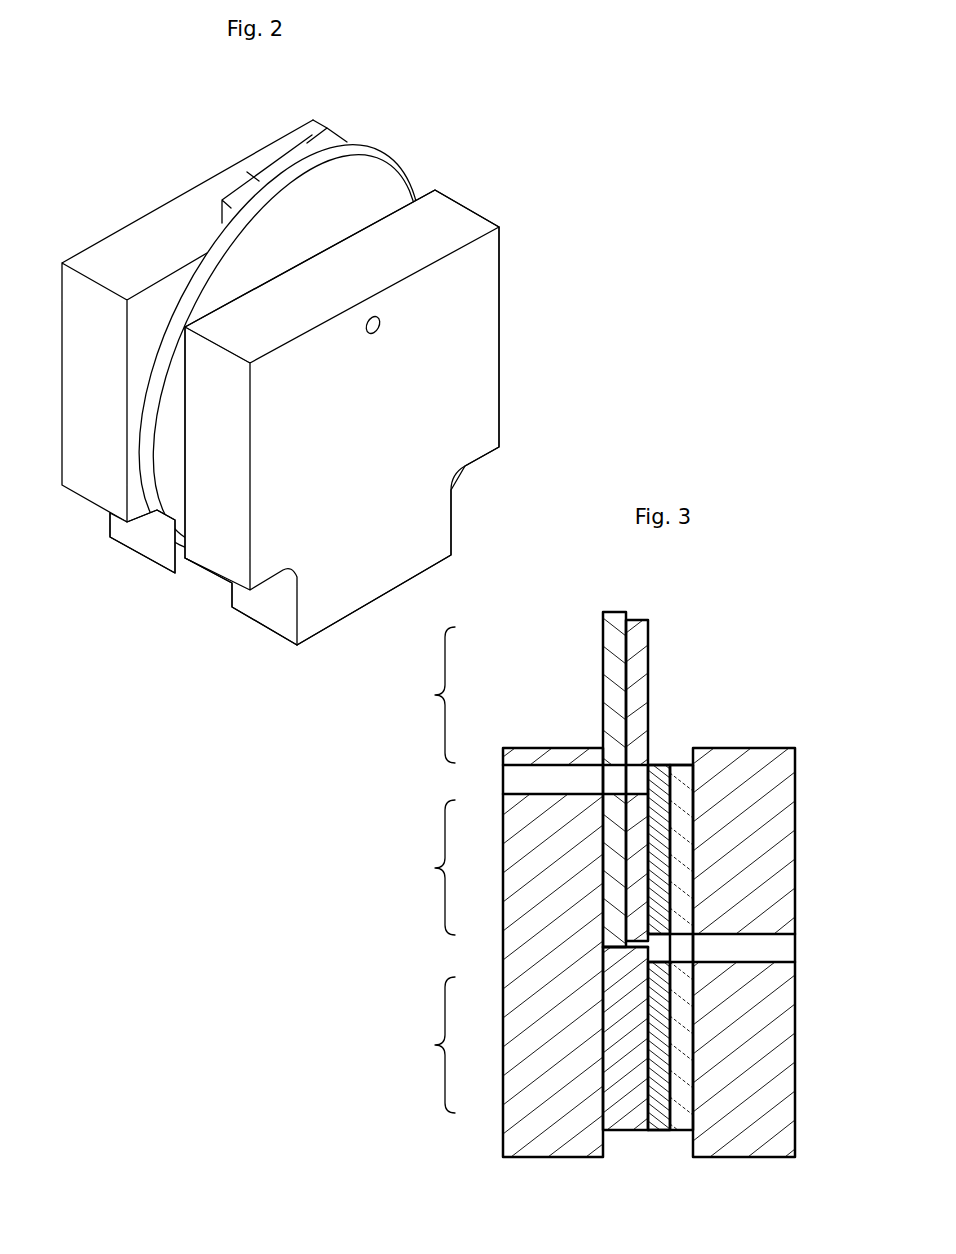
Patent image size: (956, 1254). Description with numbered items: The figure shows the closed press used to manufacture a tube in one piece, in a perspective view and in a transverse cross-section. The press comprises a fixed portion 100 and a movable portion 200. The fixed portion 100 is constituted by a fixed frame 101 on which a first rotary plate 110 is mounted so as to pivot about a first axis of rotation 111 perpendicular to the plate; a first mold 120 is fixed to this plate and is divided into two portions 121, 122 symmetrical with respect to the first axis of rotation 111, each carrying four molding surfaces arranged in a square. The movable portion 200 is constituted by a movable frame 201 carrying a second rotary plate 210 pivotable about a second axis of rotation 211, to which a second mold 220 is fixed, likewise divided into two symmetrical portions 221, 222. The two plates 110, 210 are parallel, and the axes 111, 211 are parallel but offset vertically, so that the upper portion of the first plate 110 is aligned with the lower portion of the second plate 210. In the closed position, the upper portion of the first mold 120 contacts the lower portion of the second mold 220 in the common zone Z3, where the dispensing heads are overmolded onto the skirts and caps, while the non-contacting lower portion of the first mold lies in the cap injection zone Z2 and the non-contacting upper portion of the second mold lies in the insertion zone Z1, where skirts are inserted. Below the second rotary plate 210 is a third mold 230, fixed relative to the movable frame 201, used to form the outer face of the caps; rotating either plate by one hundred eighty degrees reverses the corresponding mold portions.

In FIG. 2, the fixed portion 100 is at (95, 190).
In FIG. 3, the fixed frame 101 is at (760, 880).
In FIG. 2, the first rotary plate 110 is at (170, 435).
In FIG. 3, the first rotary plate 110 is at (682, 842).
In FIG. 3, the first axis of rotation 111 is at (755, 953).
In FIG. 3, the first mold 120 is at (773, 911).
In FIG. 3, the first portion of the first mold 121 is at (662, 808).
In FIG. 3, the second portion of the first mold 122 is at (657, 1118).
In FIG. 2, the movable portion 200 is at (560, 337).
In FIG. 2, the movable frame 201 is at (447, 227).
In FIG. 3, the movable frame 201 is at (532, 1080).
In FIG. 2, the second rotary plate 210 is at (363, 198).
In FIG. 3, the second rotary plate 210 is at (612, 647).
In FIG. 2, the second axis of rotation 211 is at (383, 333).
In FIG. 3, the second axis of rotation 211 is at (518, 773).
In FIG. 2, the second mold 220 is at (311, 328).
In FIG. 3, the second mold 220 is at (698, 756).
In FIG. 3, the first portion of the second mold 221 is at (638, 670).
In FIG. 3, the second portion of the second mold 222 is at (635, 906).
In FIG. 3, the third mold 230 is at (625, 1088).
In FIG. 3, the insertion zone Z1 is at (426, 695).
In FIG. 3, the cap injection zone Z2 is at (426, 1045).
In FIG. 3, the common zone Z3 is at (426, 867).